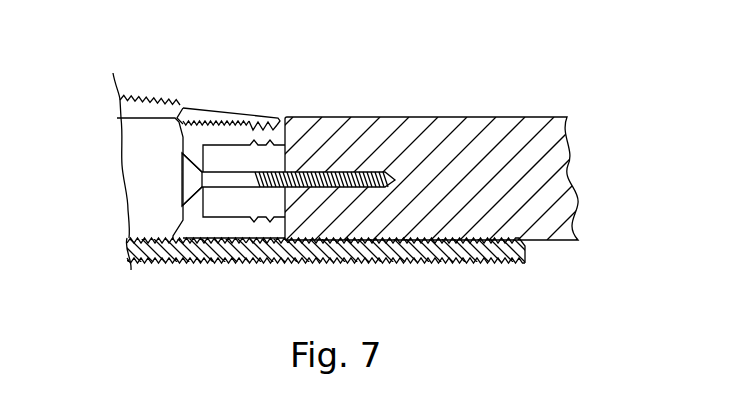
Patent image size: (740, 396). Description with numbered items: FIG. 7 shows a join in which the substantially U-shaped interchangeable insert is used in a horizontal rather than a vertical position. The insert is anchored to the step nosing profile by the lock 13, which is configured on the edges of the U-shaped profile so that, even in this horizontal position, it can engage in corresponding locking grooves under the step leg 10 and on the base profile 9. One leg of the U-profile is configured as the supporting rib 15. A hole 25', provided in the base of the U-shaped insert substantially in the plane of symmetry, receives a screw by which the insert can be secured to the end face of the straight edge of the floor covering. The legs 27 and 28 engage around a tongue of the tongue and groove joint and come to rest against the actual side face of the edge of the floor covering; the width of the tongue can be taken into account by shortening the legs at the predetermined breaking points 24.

The step leg 10 is at (147, 103).
The lock 13 is at (180, 105).
The predetermined breaking points 24 is at (258, 119).
The leg 28 is at (287, 116).
The hole 25' is at (144, 171).
The leg 27 is at (288, 226).
The supporting rib 15 is at (193, 213).
The base profile 9 is at (209, 262).